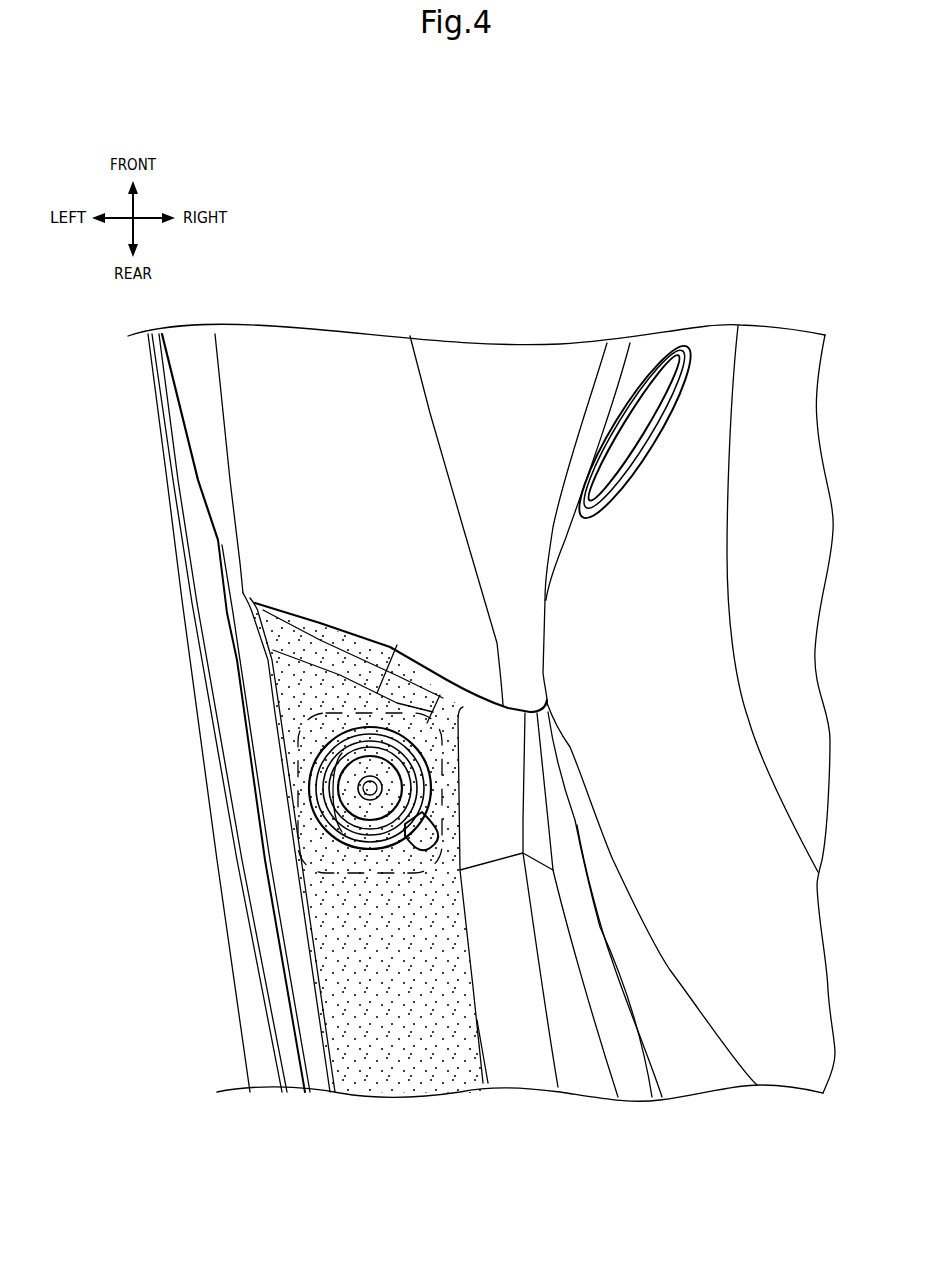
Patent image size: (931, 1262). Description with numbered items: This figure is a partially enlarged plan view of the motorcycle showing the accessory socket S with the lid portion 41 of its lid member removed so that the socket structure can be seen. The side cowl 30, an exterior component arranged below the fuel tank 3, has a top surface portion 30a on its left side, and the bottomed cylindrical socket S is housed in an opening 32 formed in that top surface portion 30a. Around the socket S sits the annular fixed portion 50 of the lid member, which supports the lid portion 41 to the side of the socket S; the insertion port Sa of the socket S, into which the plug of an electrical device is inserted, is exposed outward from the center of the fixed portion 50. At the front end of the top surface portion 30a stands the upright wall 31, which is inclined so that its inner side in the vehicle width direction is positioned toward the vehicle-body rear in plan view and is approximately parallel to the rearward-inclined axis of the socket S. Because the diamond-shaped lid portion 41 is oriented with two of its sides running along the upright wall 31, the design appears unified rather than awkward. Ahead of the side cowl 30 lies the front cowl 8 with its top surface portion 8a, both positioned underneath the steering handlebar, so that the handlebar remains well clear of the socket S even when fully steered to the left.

The front cowl 8 is at (190, 372).
The top surface portion of the front cowl 8a is at (268, 467).
The upright wall 31 is at (347, 645).
The insertion port Sa is at (370, 755).
The fixed portion 50 is at (343, 755).
The opening 32 is at (342, 790).
The lid portion 41 is at (342, 832).
The top surface portion of the side cowl 30a is at (343, 938).
The side cowl 30 is at (305, 990).
The accessory socket S is at (388, 778).
The fuel tank 3 is at (680, 885).